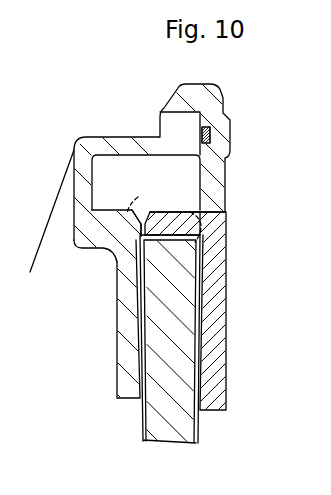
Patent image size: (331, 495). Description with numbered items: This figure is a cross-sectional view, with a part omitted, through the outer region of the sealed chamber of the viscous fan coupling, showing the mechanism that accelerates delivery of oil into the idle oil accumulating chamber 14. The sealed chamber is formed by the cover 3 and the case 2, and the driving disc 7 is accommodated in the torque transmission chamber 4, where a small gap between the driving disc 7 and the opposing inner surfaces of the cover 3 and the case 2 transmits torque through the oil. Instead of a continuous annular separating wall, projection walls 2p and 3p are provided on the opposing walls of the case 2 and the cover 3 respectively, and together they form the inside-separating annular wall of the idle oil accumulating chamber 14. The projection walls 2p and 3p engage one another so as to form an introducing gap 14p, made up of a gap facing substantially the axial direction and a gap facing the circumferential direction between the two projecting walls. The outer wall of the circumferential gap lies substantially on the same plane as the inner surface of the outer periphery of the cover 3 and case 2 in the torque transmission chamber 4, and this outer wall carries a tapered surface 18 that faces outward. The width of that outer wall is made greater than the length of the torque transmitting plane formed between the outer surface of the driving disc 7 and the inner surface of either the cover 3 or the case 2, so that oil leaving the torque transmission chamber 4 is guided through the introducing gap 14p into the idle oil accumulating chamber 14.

The idle oil accumulating chamber 14 is at (132, 168).
The introducing gap 14p is at (105, 257).
The cover 3 is at (124, 343).
The projection wall 3p is at (138, 222).
The tapered surface 18 is at (138, 212).
The torque transmission chamber 4 is at (198, 367).
The driving disc 7 is at (180, 323).
The case 2 is at (220, 275).
The projection wall 2p is at (205, 246).